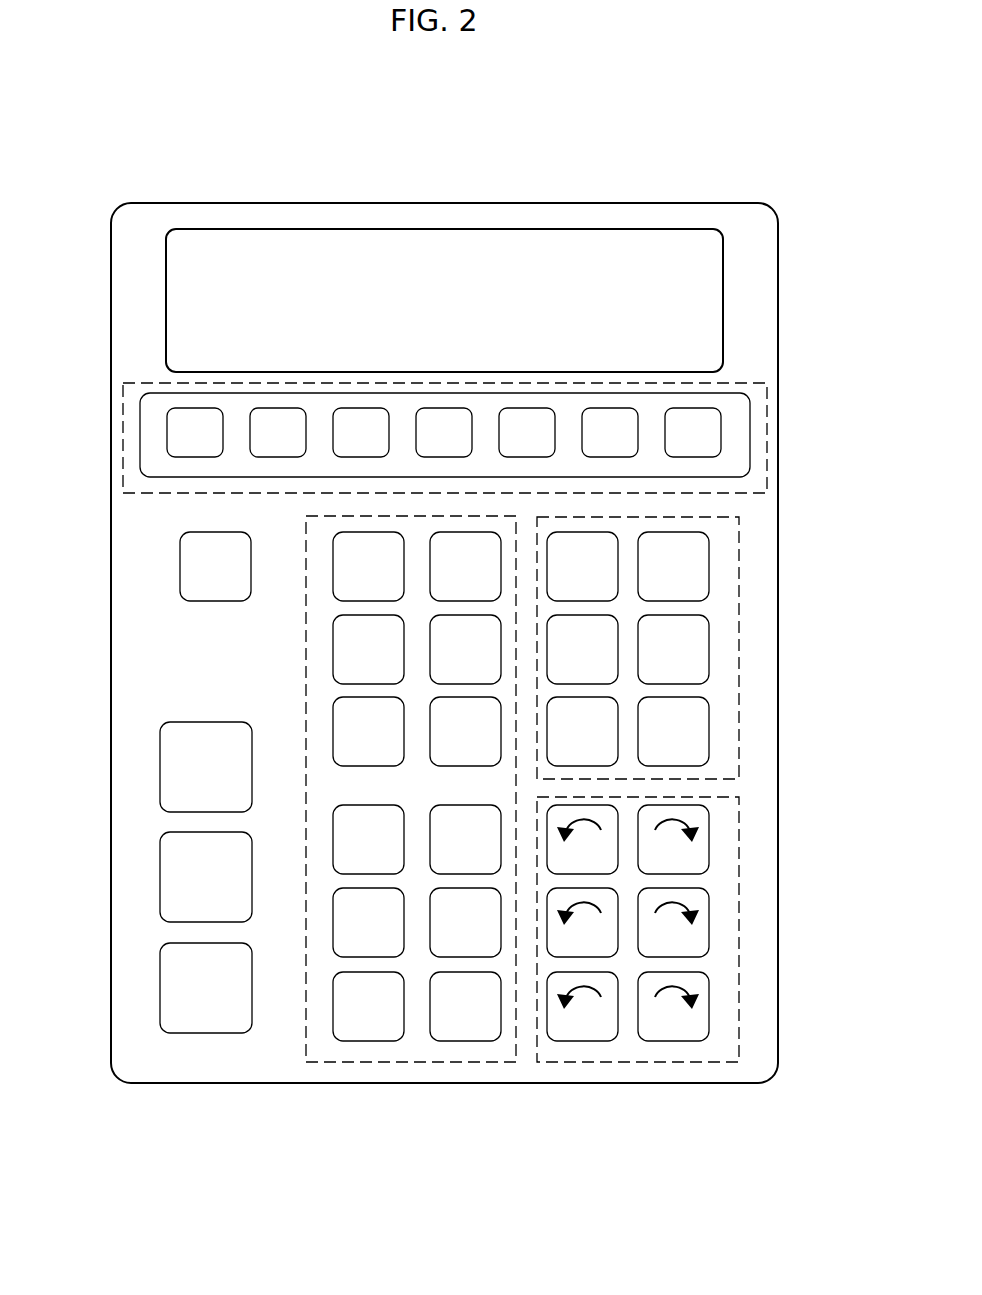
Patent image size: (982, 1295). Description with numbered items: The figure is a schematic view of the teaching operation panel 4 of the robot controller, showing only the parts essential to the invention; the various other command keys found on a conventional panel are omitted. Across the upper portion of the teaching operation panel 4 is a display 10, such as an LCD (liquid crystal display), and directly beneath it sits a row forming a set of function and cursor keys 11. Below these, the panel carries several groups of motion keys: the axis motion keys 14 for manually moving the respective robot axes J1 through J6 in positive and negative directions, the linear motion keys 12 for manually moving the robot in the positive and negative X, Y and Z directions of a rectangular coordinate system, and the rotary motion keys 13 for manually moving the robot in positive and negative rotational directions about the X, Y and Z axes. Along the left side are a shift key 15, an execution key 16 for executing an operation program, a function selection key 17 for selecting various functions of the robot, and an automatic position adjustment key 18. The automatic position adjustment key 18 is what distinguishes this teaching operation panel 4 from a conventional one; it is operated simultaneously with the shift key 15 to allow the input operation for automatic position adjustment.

The teaching operation panel 4 is at (597, 203).
The display 10 is at (503, 229).
The function and cursor keys 11 is at (767, 453).
The linear motion keys 12 is at (739, 613).
The rotary motion keys 13 is at (739, 932).
The axis motion keys 14 is at (406, 1062).
The shift key 15 is at (180, 560).
The execution key 16 is at (160, 770).
The function selection key 17 is at (160, 870).
The automatic position adjustment key 18 is at (160, 980).